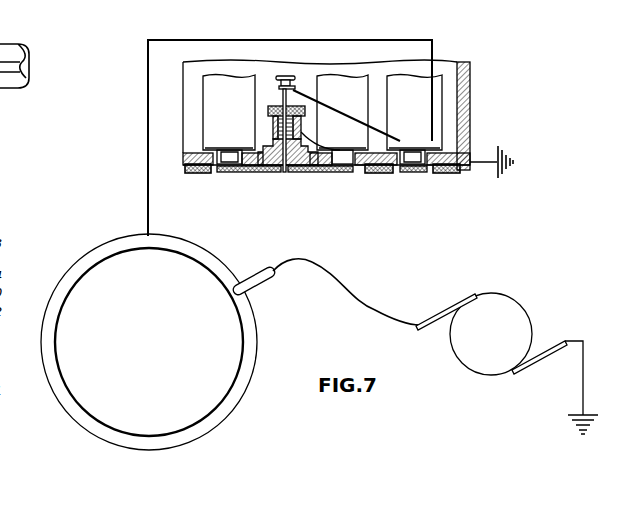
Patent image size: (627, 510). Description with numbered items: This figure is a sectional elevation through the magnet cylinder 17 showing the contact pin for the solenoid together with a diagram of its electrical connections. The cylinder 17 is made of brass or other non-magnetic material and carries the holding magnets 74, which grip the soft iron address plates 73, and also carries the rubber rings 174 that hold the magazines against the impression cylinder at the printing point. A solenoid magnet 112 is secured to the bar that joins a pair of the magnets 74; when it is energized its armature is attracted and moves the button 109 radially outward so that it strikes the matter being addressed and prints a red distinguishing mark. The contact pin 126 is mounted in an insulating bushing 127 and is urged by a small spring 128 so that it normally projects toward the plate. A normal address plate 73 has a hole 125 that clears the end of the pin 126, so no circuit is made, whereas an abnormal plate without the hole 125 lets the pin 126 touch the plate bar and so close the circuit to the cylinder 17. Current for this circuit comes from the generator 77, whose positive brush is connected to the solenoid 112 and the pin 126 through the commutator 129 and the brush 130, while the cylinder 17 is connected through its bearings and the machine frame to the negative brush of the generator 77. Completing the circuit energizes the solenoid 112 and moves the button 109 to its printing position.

The magnet cylinder 17 is at (465, 101).
The address plate 73 is at (318, 172).
The holding magnet 74 is at (203, 88).
The generator 77 is at (511, 356).
The button 109 is at (413, 165).
The solenoid magnet 112 is at (414, 113).
The hole 125 is at (284, 173).
The contact pin 126 is at (305, 138).
The insulating bushing 127 is at (273, 139).
The spring 128 is at (268, 111).
The commutator 129 is at (61, 382).
The brush 130 is at (265, 274).
The rubber ring 174 is at (198, 173).